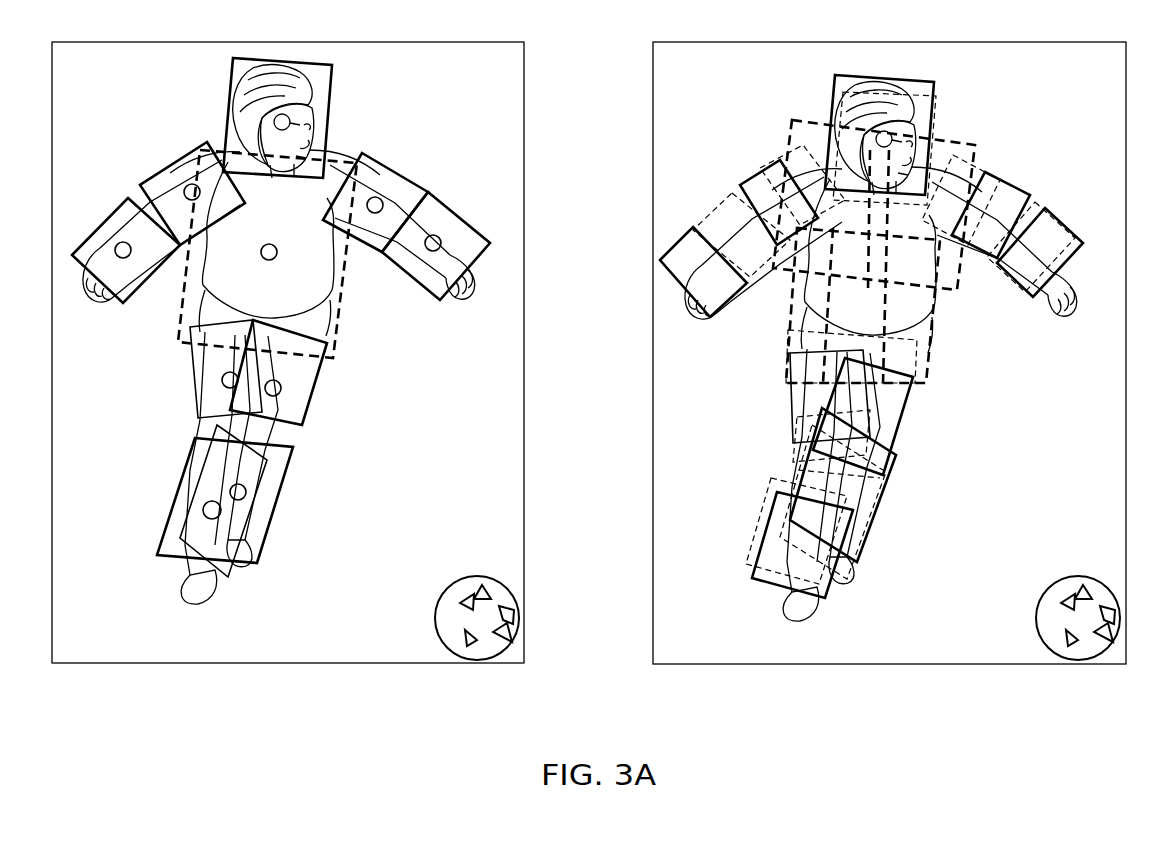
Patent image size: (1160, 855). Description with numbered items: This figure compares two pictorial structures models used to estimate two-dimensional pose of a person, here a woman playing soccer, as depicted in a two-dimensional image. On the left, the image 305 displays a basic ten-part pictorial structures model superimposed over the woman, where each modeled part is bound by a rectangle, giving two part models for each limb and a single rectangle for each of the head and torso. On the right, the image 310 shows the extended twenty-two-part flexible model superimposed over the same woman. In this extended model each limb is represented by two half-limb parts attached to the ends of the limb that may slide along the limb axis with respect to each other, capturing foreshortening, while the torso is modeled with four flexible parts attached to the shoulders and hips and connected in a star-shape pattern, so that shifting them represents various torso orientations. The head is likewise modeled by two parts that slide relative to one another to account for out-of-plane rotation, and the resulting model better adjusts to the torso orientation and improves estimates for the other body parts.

The image 305 is at (317, 663).
The image 310 is at (920, 664).